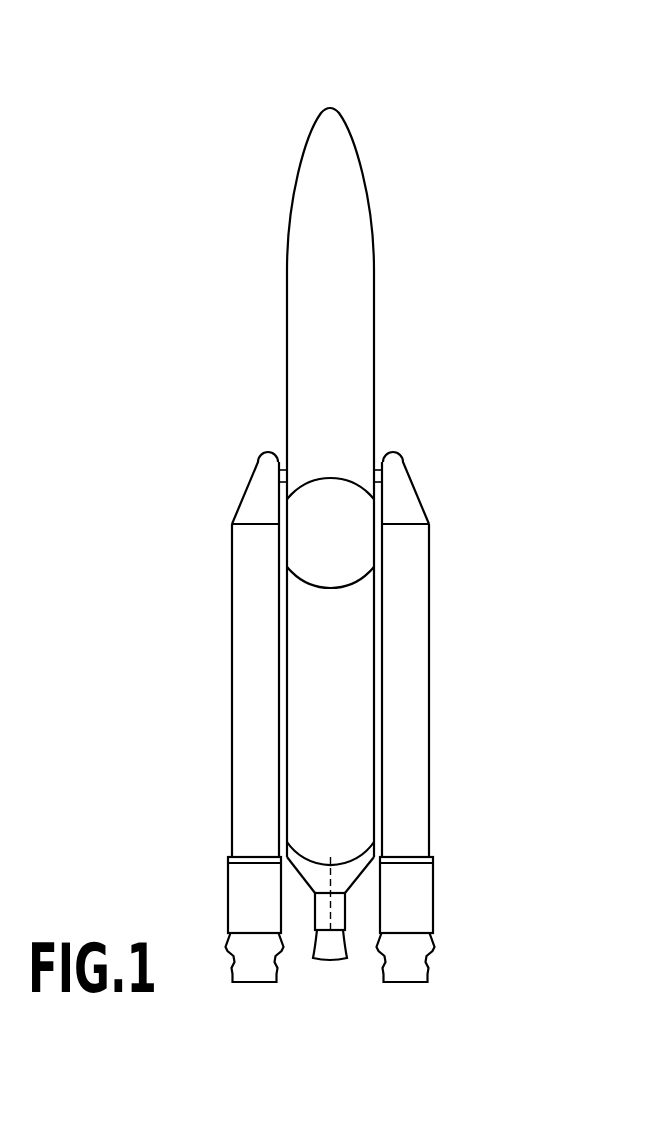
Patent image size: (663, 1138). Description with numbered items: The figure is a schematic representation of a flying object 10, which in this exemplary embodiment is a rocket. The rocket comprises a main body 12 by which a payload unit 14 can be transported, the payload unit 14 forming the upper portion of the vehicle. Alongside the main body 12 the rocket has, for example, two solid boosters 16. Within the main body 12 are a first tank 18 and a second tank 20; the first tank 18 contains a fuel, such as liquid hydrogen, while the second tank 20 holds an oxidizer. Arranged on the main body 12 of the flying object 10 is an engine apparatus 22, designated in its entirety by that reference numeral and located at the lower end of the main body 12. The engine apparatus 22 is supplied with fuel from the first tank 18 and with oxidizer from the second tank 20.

The flying object 10 is at (265, 97).
The main body 12 is at (410, 275).
The payload unit 14 is at (345, 187).
The solid boosters 16 is at (250, 623).
The first tank 18 is at (343, 798).
The second tank 20 is at (343, 545).
The engine apparatus 22 is at (297, 954).